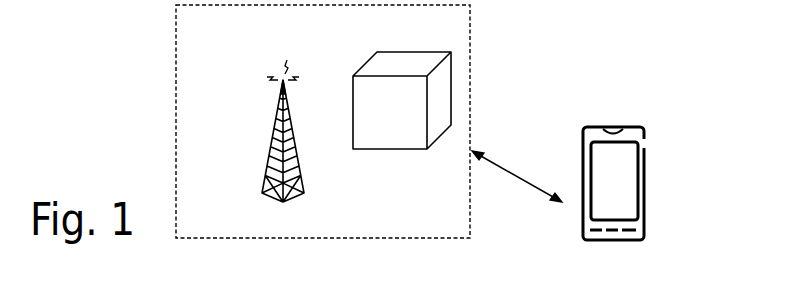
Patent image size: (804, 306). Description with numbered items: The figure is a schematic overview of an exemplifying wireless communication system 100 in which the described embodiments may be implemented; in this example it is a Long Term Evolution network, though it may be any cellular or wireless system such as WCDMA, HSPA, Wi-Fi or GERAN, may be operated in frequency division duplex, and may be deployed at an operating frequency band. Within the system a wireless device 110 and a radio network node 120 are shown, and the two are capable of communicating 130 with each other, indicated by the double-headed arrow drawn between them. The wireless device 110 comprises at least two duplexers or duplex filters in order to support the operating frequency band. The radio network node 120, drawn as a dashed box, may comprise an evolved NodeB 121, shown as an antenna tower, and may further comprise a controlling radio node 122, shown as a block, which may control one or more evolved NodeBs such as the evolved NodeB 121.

The wireless communication system 100 is at (538, 81).
The wireless device 110 is at (613, 183).
The radio network node 120 is at (323, 121).
The evolved NodeB 121 is at (257, 145).
The controlling radio node 122 is at (402, 100).
The communicating 130 is at (517, 167).